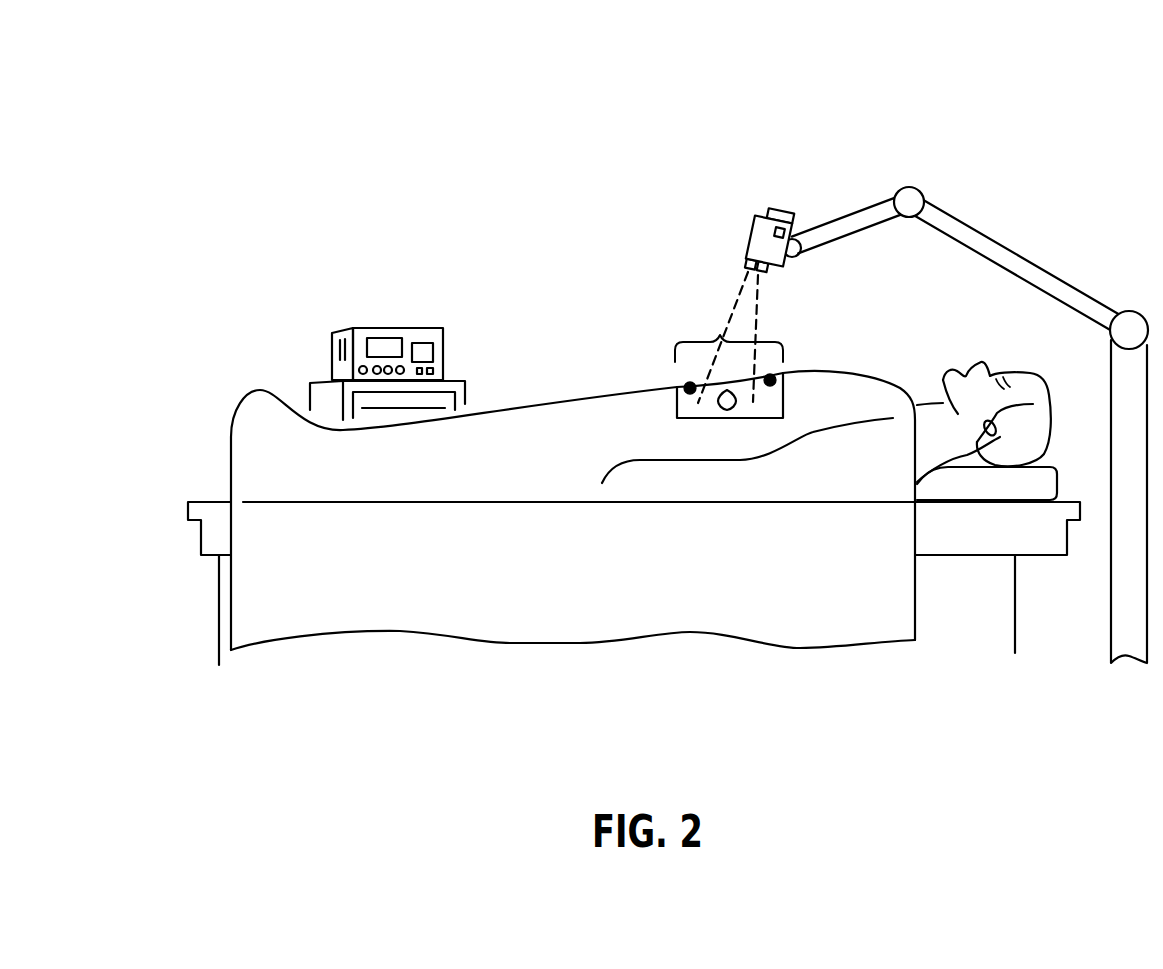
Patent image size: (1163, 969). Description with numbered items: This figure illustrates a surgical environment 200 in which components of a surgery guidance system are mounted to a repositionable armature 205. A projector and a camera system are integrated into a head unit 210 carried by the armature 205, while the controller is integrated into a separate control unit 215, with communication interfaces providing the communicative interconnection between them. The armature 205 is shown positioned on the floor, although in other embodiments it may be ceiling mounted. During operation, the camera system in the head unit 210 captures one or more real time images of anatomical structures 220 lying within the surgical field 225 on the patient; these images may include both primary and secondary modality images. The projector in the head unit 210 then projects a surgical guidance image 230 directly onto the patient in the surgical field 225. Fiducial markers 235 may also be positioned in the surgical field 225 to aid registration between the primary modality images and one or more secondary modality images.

The surgical environment 200 is at (287, 106).
The repositionable armature 205 is at (1018, 250).
The head unit 210 is at (755, 214).
The control unit 215 is at (312, 330).
The anatomical structures 220 is at (727, 408).
The surgical field 225 is at (720, 335).
The surgical guidance image 230 is at (757, 327).
The fiducial markers 235 is at (681, 392).